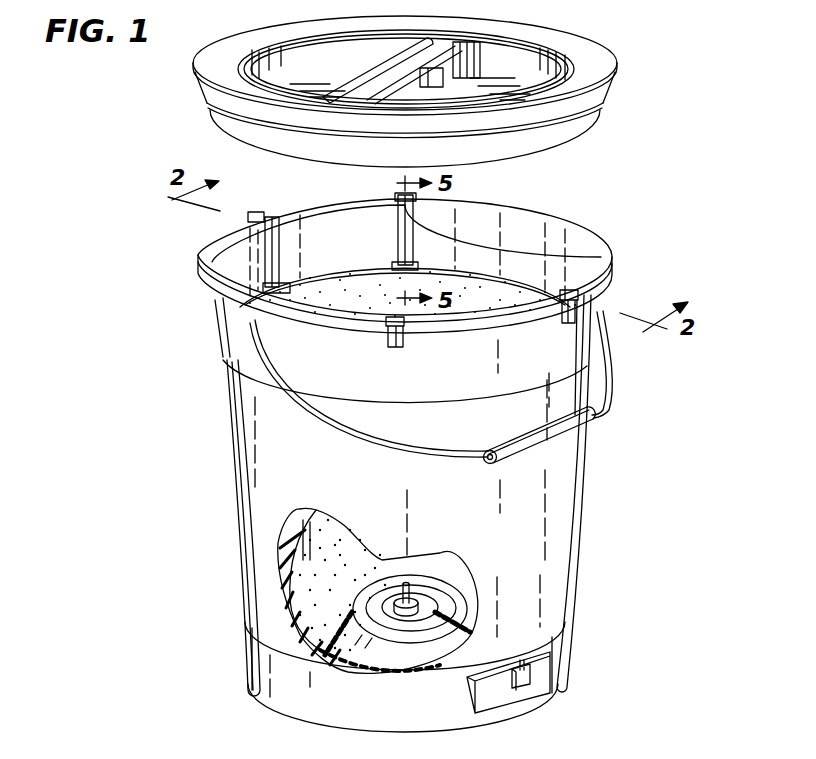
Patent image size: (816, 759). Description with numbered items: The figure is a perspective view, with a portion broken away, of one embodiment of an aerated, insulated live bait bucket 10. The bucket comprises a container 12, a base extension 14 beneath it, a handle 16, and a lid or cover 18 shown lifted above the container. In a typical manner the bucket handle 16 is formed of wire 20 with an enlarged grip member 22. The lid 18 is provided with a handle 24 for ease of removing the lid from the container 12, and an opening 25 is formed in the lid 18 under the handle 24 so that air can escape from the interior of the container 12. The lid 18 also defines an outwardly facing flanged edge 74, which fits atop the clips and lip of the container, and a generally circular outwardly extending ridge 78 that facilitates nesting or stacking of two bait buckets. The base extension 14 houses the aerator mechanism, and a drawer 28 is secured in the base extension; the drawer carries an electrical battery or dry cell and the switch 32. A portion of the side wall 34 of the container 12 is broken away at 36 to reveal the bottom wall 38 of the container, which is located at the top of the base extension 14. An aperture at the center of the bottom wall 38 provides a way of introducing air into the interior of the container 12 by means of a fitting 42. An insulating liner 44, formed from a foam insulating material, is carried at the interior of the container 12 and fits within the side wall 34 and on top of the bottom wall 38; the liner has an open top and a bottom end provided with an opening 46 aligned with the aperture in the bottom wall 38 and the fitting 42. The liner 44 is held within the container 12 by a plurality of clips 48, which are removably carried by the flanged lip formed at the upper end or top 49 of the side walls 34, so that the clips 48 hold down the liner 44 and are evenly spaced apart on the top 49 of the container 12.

The live bait bucket 10 is at (444, 464).
The container 12 is at (564, 590).
The base extension 14 is at (563, 643).
The handle 16 is at (590, 435).
The lid 18 is at (458, 89).
The wire 20 is at (612, 371).
The grip member 22 is at (558, 432).
The handle 24 is at (453, 57).
The opening 25 is at (533, 70).
The drawer 28 is at (497, 697).
The switch 32 is at (528, 684).
The side wall 34 is at (282, 580).
The broken away portion 36 is at (279, 542).
The bottom wall 38 is at (362, 662).
The fitting 42 is at (412, 598).
The insulating liner 44 is at (517, 293).
The opening 46 is at (342, 585).
The clips 48 is at (280, 222).
The top 49 is at (613, 252).
The flanged edge 74 is at (607, 97).
The ridge 78 is at (575, 60).